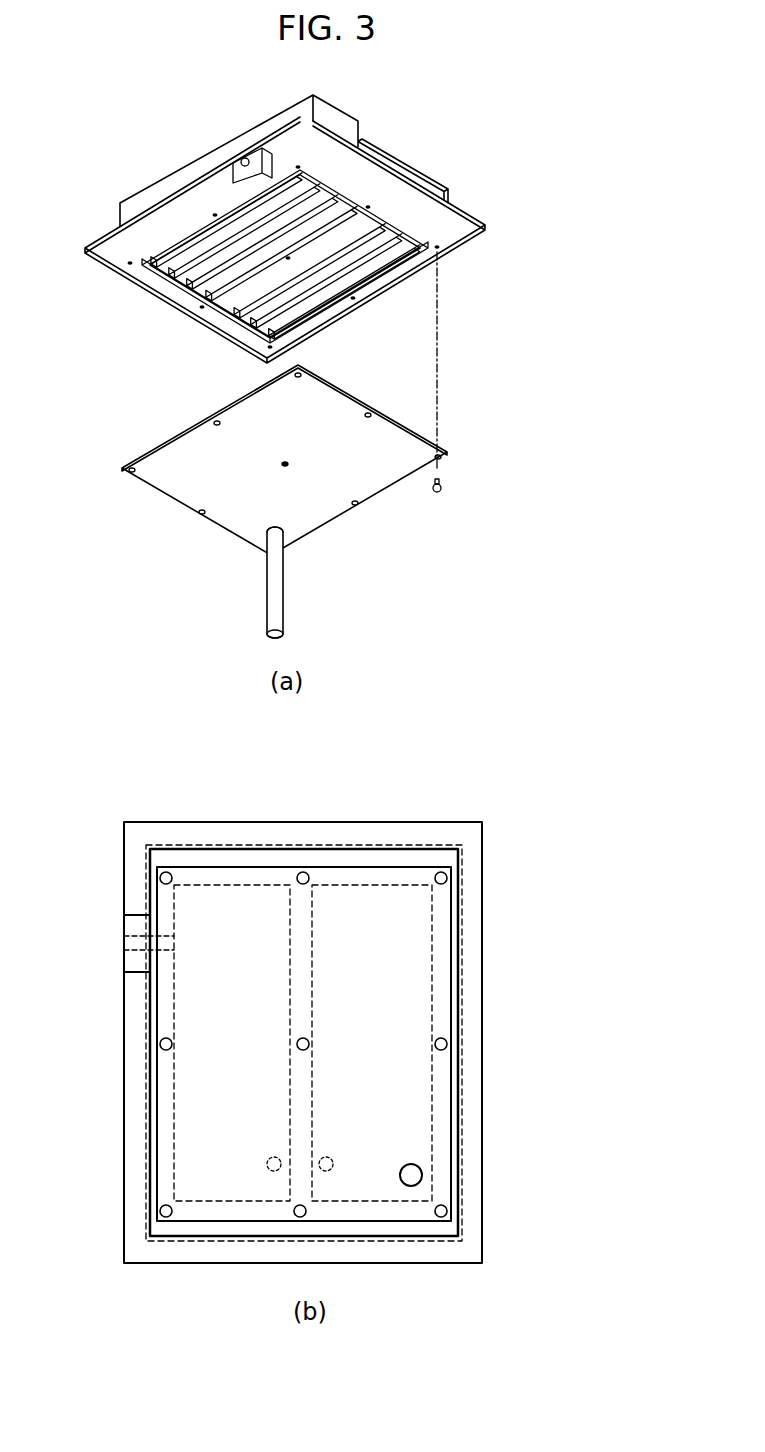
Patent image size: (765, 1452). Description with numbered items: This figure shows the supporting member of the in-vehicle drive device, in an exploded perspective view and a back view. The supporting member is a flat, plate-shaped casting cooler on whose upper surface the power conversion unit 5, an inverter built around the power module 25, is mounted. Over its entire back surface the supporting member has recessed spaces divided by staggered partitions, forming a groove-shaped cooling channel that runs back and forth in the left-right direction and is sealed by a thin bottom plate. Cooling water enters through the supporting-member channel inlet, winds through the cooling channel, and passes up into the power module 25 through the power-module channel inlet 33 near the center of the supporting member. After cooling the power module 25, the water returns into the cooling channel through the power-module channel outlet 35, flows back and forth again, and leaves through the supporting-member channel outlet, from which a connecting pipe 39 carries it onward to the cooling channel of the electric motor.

The power conversion unit 5 is at (385, 110).
The power module 25 is at (408, 172).
The power-module channel inlet 33 is at (276, 1156).
The power-module channel outlet 35 is at (328, 1156).
The connecting pipe 39 is at (284, 582).